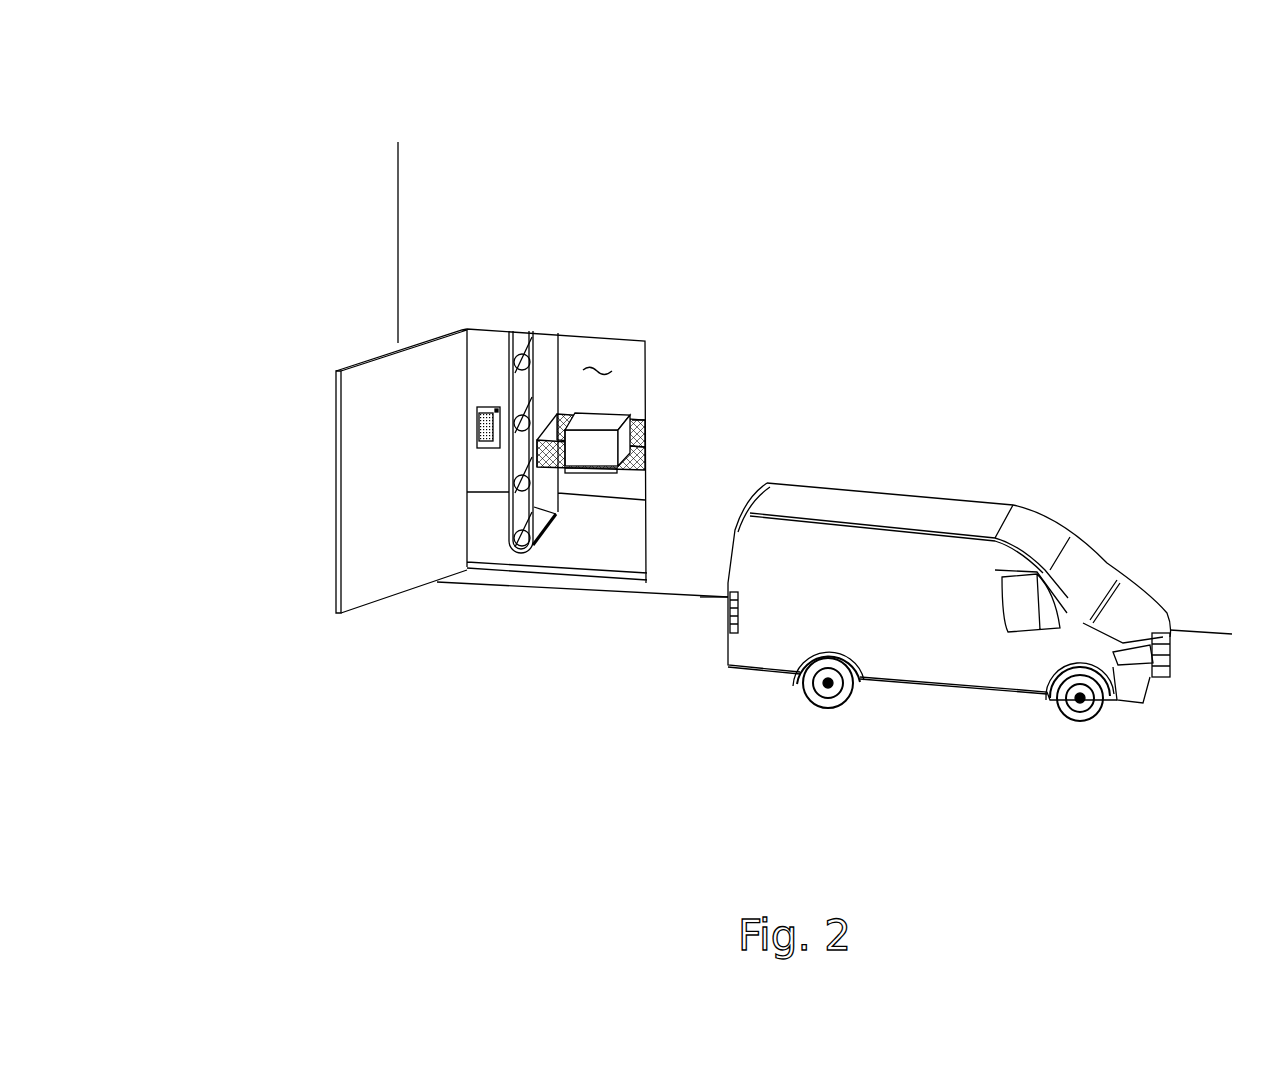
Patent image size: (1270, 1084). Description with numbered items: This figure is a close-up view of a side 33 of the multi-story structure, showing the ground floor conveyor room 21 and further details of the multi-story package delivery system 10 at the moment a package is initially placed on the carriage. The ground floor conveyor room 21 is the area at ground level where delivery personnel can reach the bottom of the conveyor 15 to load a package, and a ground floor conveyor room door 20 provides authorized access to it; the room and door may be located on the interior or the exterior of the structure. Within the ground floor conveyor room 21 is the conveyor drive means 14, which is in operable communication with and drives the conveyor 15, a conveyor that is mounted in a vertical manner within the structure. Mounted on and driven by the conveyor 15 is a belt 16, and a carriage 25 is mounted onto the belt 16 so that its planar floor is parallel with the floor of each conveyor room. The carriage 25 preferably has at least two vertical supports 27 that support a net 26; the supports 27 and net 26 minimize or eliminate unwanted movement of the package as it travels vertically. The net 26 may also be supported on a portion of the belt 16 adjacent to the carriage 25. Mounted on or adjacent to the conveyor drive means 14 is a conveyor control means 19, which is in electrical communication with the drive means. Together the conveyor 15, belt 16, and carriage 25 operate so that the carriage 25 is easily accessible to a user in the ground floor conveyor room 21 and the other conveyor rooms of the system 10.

The multi-story package delivery system 10 is at (252, 217).
The conveyor drive means 14 is at (520, 545).
The conveyor 15 is at (538, 543).
The belt 16 is at (545, 495).
The conveyor control means 19 is at (480, 432).
The ground floor conveyor room door 20 is at (380, 373).
The ground floor conveyor room 21 is at (601, 369).
The carriage 25 is at (622, 472).
The net 26 is at (602, 458).
The vertical supports 27 is at (565, 428).
The side 33 is at (450, 242).